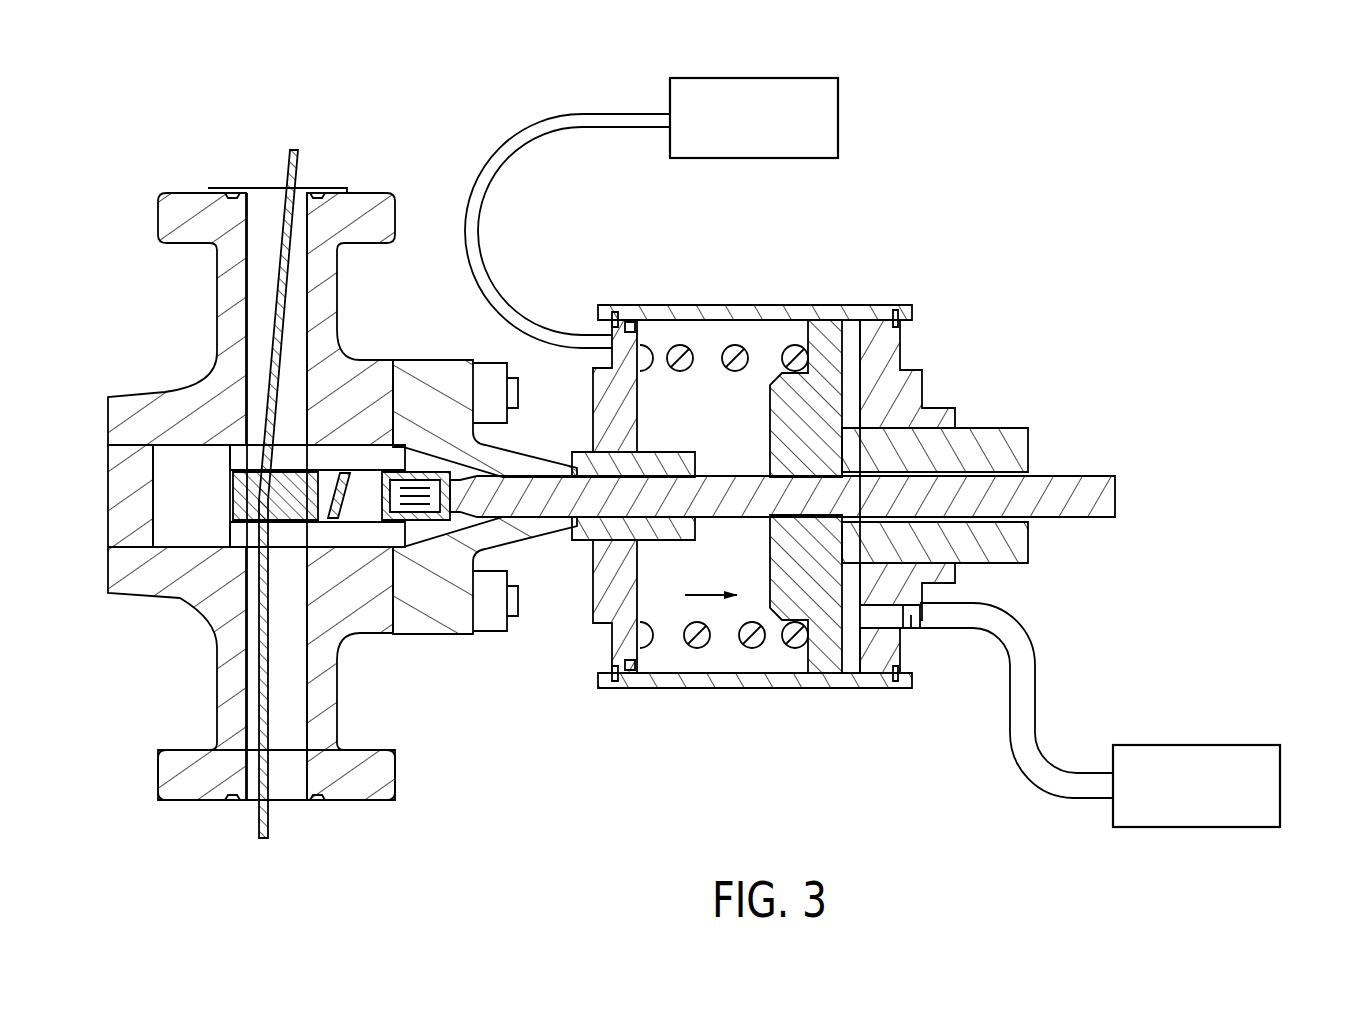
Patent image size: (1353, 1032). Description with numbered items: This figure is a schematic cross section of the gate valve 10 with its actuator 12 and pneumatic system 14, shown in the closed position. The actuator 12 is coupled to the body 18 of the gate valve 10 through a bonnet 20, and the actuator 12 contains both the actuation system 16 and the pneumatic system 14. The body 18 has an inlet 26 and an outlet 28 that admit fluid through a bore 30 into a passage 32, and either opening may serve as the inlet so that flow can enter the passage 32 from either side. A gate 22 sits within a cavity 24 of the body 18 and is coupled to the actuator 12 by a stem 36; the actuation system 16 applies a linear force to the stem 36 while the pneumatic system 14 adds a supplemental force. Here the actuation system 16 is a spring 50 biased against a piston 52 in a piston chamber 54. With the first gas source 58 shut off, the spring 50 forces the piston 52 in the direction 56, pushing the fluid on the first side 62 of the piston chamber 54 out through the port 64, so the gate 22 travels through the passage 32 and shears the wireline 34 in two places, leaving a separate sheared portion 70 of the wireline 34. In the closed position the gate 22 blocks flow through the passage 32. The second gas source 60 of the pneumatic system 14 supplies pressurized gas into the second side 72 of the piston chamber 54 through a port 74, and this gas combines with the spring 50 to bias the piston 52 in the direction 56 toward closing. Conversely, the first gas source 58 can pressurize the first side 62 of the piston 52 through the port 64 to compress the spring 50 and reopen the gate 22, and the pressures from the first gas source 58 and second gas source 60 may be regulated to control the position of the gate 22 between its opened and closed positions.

The gate valve 10 is at (1003, 140).
The actuator 12 is at (1082, 293).
The pneumatic system 14 is at (797, 60).
The actuation system 16 is at (745, 701).
The body 18 is at (347, 372).
The bonnet 20 is at (443, 380).
The gate 22 is at (257, 498).
The cavity 24 is at (170, 475).
The inlet 26 is at (255, 188).
The outlet 28 is at (287, 802).
The bore 30 is at (270, 186).
The passage 32 is at (291, 298).
The wireline 34 is at (293, 175).
The stem 36 is at (580, 470).
The spring 50 is at (700, 648).
The piston 52 is at (822, 600).
The piston chamber 54 is at (765, 345).
The direction 56 is at (700, 595).
The first gas source 58 is at (1283, 790).
The second gas source 60 is at (752, 78).
The first side 62 is at (851, 645).
The port 64 is at (880, 627).
The sheared portion 70 is at (345, 500).
The second side 72 is at (708, 337).
The port 74 is at (618, 330).